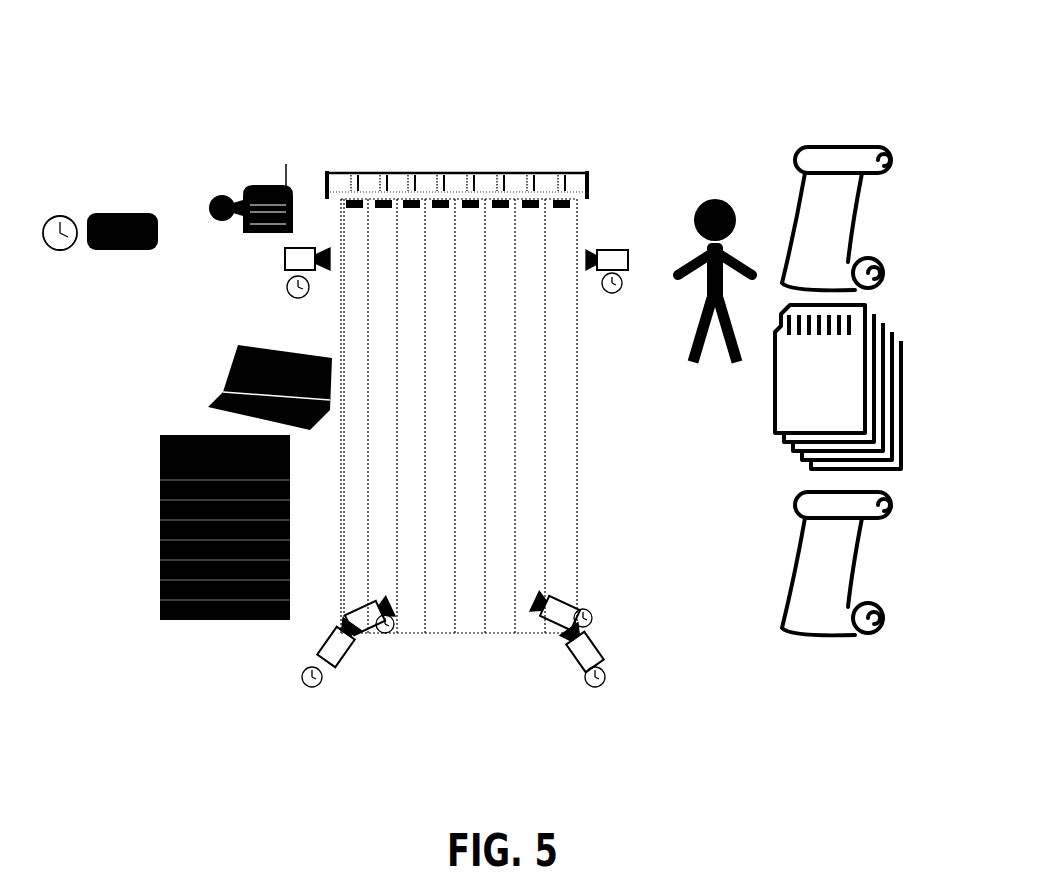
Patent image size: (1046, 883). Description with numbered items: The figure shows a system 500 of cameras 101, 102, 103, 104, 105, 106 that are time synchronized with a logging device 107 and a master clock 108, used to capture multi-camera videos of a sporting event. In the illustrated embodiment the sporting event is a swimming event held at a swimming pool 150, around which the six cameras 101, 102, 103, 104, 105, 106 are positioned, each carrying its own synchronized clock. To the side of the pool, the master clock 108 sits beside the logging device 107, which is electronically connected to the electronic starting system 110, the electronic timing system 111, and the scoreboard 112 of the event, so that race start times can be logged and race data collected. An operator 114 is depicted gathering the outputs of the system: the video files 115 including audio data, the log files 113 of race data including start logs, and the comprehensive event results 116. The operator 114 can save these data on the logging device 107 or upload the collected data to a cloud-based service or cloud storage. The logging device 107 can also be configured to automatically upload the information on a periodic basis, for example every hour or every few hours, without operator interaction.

The system 500 is at (778, 70).
The swimming pool 150 is at (590, 176).
The camera 101 is at (284, 258).
The camera 102 is at (622, 249).
The camera 103 is at (350, 615).
The camera 104 is at (585, 608).
The camera 105 is at (315, 660).
The camera 106 is at (605, 650).
The logging device 107 is at (137, 251).
The master clock 108 is at (62, 251).
The electronic starting system 110 is at (263, 185).
The electronic timing system 111 is at (238, 367).
The scoreboard 112 is at (160, 486).
The log files 113 is at (878, 200).
The operator 114 is at (716, 198).
The video files 115 is at (905, 356).
The event results 116 is at (875, 562).